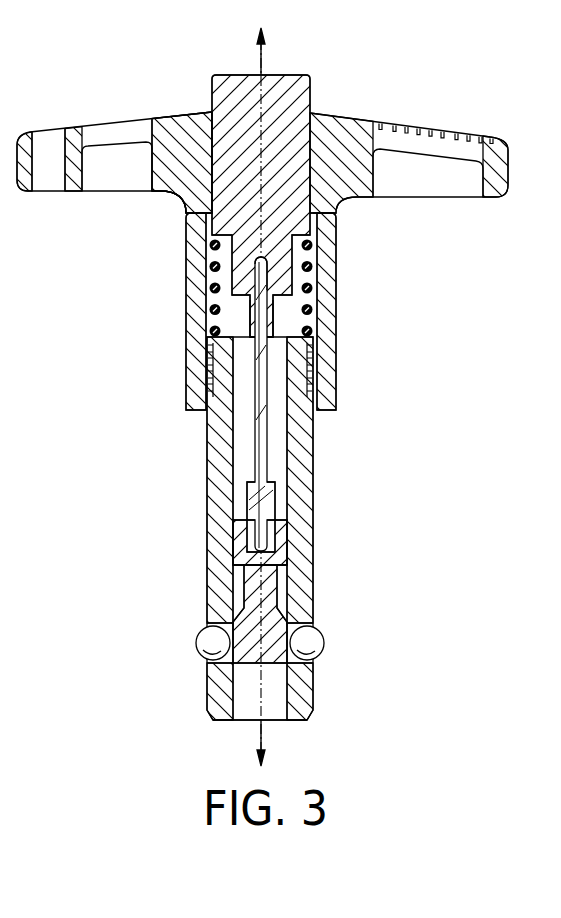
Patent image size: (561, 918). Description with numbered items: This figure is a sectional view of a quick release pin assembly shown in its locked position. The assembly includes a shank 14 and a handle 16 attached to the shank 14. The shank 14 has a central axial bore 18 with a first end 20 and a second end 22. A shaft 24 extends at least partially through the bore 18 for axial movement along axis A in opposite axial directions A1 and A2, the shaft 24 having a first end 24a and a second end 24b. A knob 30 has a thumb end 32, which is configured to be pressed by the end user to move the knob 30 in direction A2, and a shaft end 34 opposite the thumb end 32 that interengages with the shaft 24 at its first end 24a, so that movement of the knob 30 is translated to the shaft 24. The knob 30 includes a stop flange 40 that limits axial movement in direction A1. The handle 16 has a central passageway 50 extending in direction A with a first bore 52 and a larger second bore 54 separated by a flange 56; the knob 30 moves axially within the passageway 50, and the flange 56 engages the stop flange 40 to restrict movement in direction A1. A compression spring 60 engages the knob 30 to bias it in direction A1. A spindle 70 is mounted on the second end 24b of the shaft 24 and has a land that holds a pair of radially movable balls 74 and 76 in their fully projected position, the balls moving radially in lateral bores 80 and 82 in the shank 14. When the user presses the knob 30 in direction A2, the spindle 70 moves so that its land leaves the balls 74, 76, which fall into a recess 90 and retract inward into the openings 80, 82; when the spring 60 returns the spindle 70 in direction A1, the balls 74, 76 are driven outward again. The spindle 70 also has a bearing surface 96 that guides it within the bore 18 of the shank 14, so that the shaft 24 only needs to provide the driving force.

The shank 14 is at (314, 495).
The handle 16 is at (334, 293).
The central axial bore 18 is at (286, 462).
The first end 20 is at (211, 330).
The second end 22 is at (309, 711).
The shaft 24 is at (255, 440).
The first end 24a is at (270, 270).
The second end 24b is at (277, 520).
The knob 30 is at (212, 75).
The thumb end 32 is at (307, 77).
The shaft end 34 is at (274, 318).
The stop flange 40 is at (316, 157).
The central passageway 50 is at (148, 119).
The first bore 52 is at (203, 157).
The second bore 54 is at (205, 293).
The flange 56 is at (183, 209).
The compression spring 60 is at (209, 257).
The spindle 70 is at (279, 600).
The ball 74 is at (204, 636).
The ball 76 is at (319, 636).
The lateral bore 80 is at (199, 650).
The lateral bore 82 is at (323, 652).
The recess 90 is at (236, 570).
The bearing surface 96 is at (240, 521).
The axis A is at (266, 733).
The axial direction A1 is at (247, 47).
The axial direction A2 is at (246, 747).